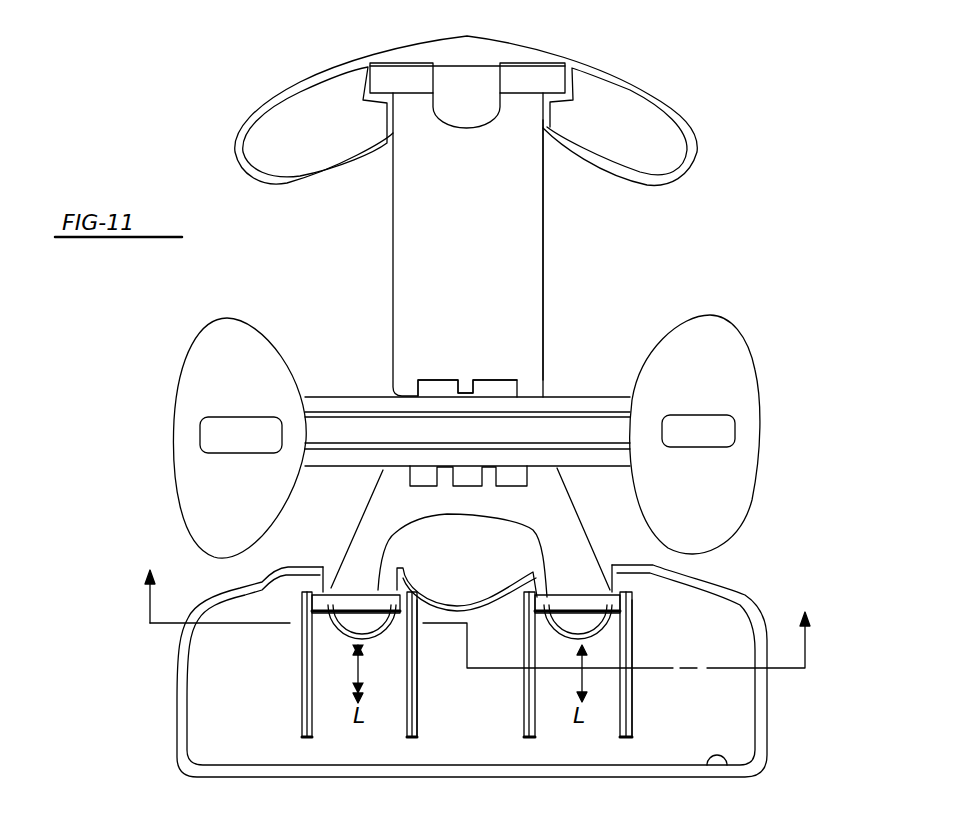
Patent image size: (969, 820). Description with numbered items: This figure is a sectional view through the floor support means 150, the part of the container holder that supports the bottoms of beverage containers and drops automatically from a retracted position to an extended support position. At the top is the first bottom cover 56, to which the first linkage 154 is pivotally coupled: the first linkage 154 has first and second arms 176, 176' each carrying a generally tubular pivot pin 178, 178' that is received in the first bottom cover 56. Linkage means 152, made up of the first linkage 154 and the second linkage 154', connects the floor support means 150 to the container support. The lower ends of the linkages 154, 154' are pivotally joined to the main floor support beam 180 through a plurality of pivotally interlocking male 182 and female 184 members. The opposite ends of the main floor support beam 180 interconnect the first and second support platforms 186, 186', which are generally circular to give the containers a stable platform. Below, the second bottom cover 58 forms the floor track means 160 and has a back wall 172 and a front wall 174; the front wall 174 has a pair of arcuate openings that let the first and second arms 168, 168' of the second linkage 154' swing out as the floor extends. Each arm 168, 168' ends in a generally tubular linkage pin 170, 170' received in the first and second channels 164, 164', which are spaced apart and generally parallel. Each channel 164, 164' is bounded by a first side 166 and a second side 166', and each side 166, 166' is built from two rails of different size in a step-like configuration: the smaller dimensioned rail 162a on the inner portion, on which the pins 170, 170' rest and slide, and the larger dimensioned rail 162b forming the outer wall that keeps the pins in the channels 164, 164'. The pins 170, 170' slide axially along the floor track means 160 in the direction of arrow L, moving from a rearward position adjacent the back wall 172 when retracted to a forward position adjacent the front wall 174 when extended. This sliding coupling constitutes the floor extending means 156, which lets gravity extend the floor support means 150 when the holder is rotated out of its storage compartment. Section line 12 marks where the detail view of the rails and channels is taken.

The section line 12- 12 is at (474, 603).
The first bottom cover 56 is at (677, 107).
The second bottom cover 58 is at (768, 758).
The floor support means 150 is at (177, 328).
The linkage means 152 is at (366, 308).
The first linkage 154 is at (596, 250).
The second linkage 154' is at (598, 529).
The floor extending means 156 is at (290, 669).
The floor track means 160 is at (362, 646).
The smaller dimensioned rail 162a is at (396, 717).
The larger dimensioned rail 162b is at (303, 713).
The first channel 164 is at (434, 668).
The second channel 164' is at (663, 668).
The first side 166 is at (425, 776).
The second side 166' is at (549, 776).
The first arm 168 is at (322, 554).
The second arm 168' is at (616, 557).
The linkage pin 170 is at (462, 555).
The linkage pin 170' is at (471, 568).
The back wall 172 is at (735, 775).
The front wall 174 is at (645, 575).
The first arm 176 is at (315, 631).
The second arm 176' is at (545, 618).
The pivot pin 178 is at (421, 55).
The pivot pin 178' is at (544, 72).
The main floor support beam 180 is at (620, 397).
The male member 182 is at (503, 380).
The female member 184 is at (548, 390).
The first support platform 186 is at (187, 438).
The second support platform 186' is at (743, 434).